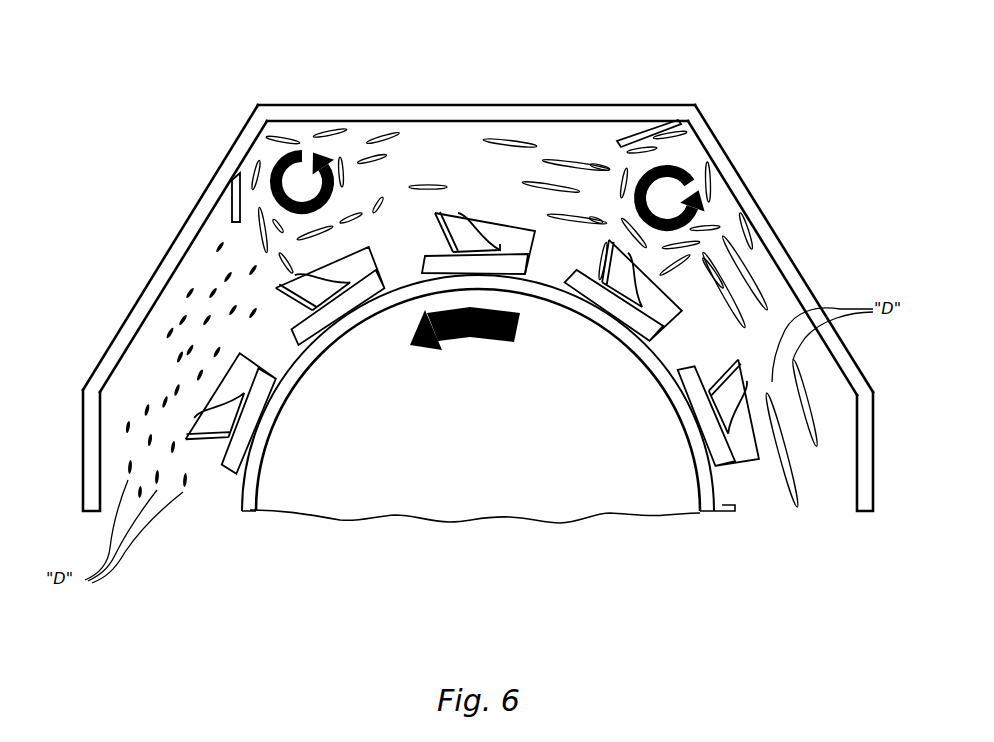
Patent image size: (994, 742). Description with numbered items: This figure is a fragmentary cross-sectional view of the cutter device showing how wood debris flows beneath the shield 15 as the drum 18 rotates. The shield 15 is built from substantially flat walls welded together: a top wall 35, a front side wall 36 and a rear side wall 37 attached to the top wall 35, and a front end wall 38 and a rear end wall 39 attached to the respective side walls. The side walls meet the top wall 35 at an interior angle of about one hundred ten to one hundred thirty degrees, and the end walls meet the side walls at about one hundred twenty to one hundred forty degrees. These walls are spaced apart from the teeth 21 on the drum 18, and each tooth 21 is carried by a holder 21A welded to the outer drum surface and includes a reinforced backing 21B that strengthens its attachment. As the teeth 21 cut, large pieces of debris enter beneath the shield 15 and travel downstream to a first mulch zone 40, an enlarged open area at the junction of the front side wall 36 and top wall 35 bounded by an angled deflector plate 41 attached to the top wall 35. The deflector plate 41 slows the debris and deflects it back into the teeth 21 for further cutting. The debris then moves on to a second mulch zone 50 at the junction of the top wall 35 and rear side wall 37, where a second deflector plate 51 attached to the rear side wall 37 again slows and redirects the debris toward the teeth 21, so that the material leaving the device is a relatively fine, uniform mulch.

The shield 15 is at (146, 260).
The drum 18 is at (497, 443).
The teeth 21 is at (450, 213).
The holder 21A is at (425, 253).
The reinforced backing 21B is at (490, 230).
The top wall 35 is at (617, 118).
The front side wall 36 is at (775, 245).
The rear side wall 37 is at (190, 233).
The front end wall 38 is at (867, 483).
The rear end wall 39 is at (83, 483).
The first mulch zone 40 is at (698, 162).
The angled deflector plate 41 is at (633, 123).
The second mulch zone 50 is at (302, 108).
The second deflector plate 51 is at (232, 208).